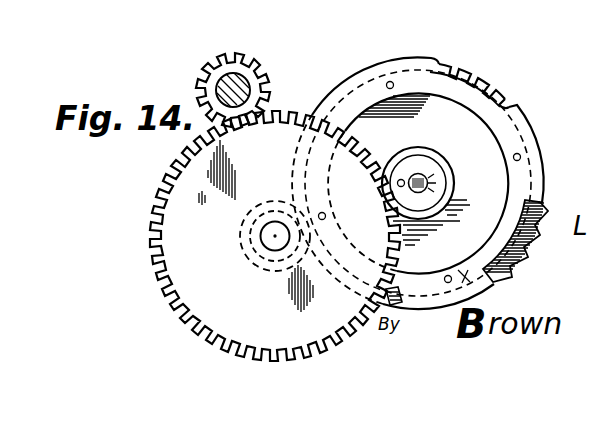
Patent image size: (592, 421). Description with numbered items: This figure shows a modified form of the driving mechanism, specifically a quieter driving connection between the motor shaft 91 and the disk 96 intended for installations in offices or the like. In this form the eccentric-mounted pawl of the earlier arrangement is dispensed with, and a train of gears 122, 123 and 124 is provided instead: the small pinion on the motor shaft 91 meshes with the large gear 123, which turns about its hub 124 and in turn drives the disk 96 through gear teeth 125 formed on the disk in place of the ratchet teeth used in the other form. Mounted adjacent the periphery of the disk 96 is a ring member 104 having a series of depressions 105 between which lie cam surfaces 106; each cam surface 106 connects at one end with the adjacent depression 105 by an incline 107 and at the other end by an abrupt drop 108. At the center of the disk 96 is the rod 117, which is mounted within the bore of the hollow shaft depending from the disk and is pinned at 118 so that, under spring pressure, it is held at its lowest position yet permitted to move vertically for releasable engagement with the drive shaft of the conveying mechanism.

The shaft 91 is at (211, 82).
The gear 122 is at (268, 86).
The gear 123 is at (151, 245).
The gear 124 is at (275, 266).
The disk 96 is at (486, 153).
The cam surfaces 106 is at (563, 176).
The gear teeth 125 is at (480, 74).
The abrupt drop 108 is at (507, 102).
The rod 117 is at (427, 177).
The pin 118 is at (432, 183).
The incline 107 is at (541, 207).
The depressions 105 is at (522, 248).
The ring member 104 is at (466, 279).